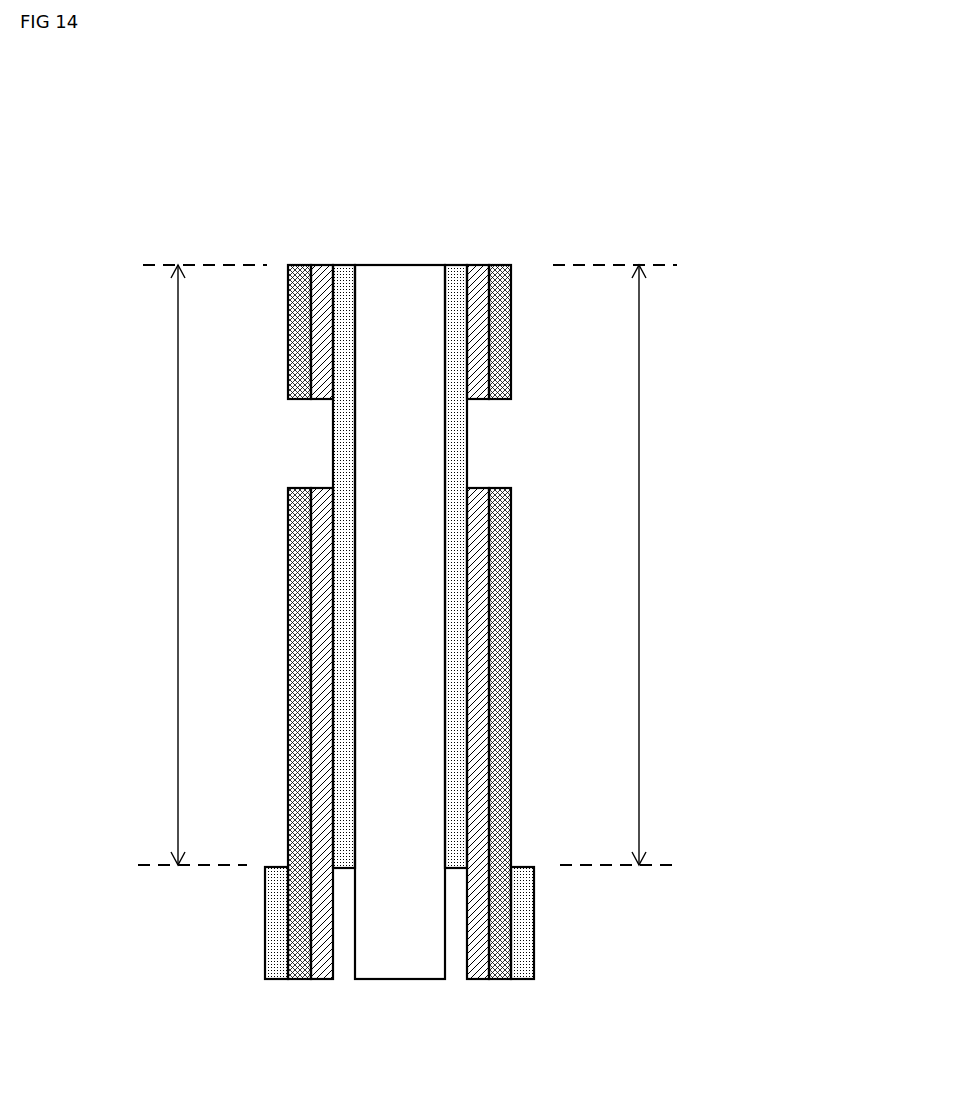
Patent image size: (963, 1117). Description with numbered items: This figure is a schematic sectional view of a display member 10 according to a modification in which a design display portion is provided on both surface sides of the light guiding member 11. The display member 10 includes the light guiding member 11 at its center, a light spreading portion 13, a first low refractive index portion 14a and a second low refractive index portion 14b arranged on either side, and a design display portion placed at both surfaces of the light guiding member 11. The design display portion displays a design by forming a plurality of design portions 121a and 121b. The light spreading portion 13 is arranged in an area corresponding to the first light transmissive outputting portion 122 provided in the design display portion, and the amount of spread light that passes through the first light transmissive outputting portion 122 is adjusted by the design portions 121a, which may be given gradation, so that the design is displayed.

The display member 10 is at (385, 548).
The light guiding member 11 is at (380, 300).
The light spreading portion 13 is at (460, 800).
The first low refractive index portion 14a is at (478, 287).
The second low refractive index portion 14b is at (322, 287).
The design portion 121a is at (290, 488).
The design portion 121b is at (277, 940).
The first light transmissive outputting portion 122 is at (177, 558).